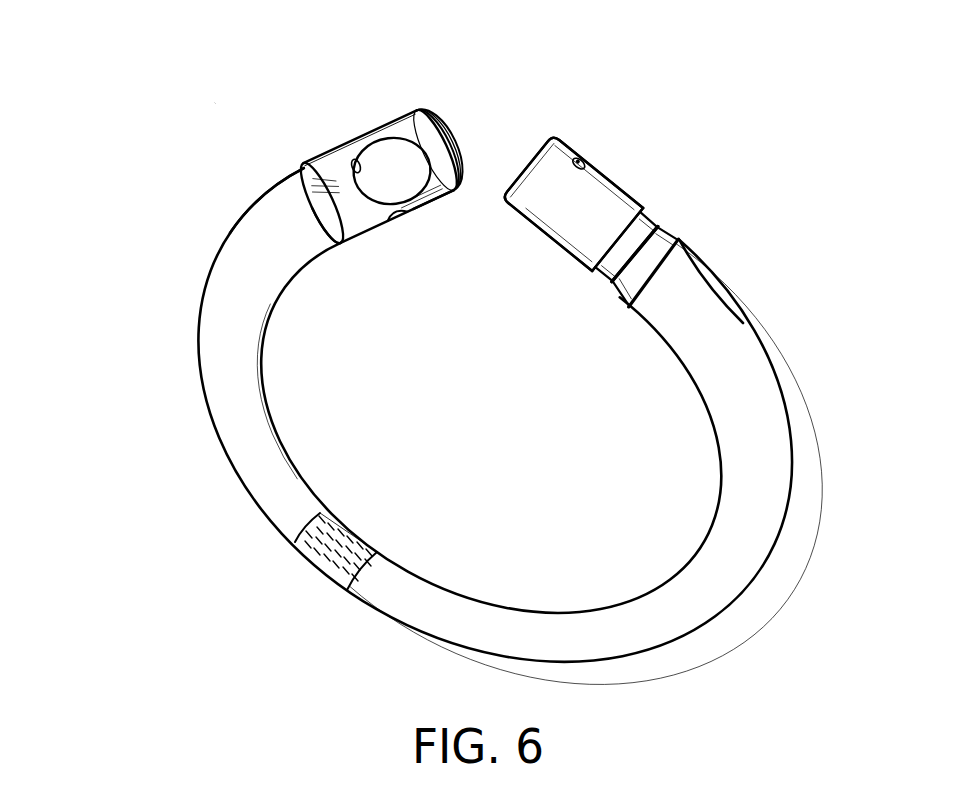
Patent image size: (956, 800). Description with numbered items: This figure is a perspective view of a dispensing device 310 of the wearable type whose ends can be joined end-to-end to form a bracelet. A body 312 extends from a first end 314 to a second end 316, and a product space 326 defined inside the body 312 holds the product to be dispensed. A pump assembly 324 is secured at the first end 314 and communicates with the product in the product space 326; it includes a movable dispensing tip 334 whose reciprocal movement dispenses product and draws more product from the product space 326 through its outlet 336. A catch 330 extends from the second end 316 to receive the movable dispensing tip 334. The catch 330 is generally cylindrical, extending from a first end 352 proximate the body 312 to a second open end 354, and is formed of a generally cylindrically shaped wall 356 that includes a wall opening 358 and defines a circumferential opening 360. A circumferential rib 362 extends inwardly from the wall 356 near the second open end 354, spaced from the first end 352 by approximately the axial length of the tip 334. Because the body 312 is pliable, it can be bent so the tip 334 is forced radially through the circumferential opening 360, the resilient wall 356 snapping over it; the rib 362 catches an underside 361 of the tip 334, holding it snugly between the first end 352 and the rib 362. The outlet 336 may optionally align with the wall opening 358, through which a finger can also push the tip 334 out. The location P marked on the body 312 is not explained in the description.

The dispensing device 310 is at (212, 102).
The body 312 is at (567, 605).
The first end 314 is at (679, 243).
The second end 316 is at (296, 160).
The pump assembly 324 is at (661, 199).
The product space 326 is at (371, 547).
The catch 330 is at (377, 127).
The movable dispensing tip 334 is at (594, 199).
The outlet 336 is at (589, 154).
The first end of catch 352 is at (340, 245).
The second open end 354 is at (431, 121).
The wall 356 is at (416, 218).
The wall opening 358 is at (320, 157).
The circumferential opening 360 is at (430, 184).
The underside 361 is at (597, 273).
The circumferential rib 362 is at (455, 157).
The pivot location P is at (331, 531).